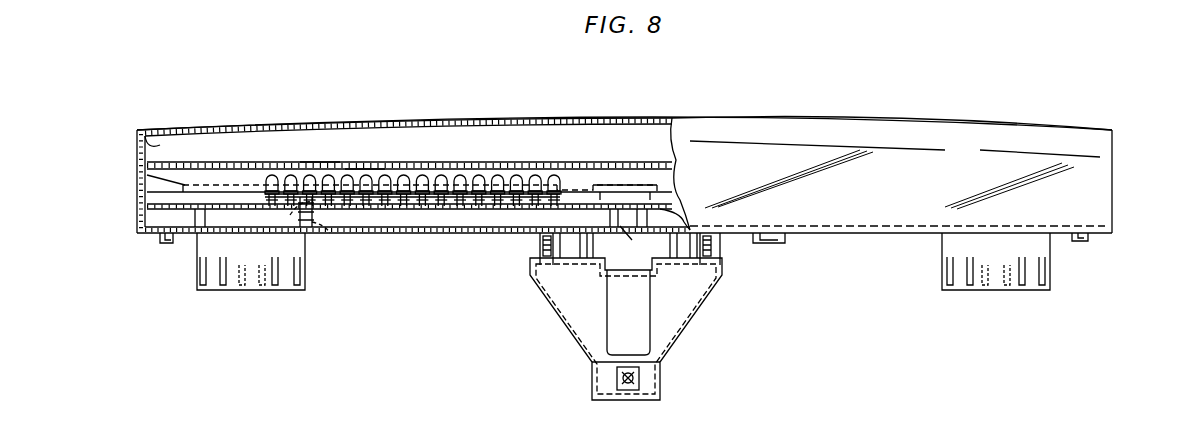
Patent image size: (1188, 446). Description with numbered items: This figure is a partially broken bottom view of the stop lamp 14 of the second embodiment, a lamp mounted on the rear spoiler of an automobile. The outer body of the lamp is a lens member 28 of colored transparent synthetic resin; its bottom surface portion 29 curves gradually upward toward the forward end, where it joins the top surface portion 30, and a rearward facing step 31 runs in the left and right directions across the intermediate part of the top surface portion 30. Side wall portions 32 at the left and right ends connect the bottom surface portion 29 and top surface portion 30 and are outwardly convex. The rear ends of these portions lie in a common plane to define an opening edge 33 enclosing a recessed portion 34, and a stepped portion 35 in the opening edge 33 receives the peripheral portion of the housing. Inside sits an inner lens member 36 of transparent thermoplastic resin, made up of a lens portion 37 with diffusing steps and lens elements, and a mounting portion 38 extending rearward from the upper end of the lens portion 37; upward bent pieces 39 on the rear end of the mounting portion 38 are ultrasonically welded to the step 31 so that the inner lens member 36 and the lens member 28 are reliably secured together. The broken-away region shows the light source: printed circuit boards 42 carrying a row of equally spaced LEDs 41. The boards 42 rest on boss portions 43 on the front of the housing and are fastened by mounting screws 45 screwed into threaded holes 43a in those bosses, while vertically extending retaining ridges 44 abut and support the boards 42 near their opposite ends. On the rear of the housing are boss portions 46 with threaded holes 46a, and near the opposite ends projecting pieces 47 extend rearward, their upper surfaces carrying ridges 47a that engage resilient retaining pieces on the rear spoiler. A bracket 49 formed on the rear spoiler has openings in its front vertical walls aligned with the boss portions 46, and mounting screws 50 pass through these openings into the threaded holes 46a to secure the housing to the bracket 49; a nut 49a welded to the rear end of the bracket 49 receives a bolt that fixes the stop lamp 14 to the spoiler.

The stop lamp 14 is at (800, 53).
The lens member 28 is at (822, 120).
The bottom surface portion 29 is at (852, 232).
The top surface portion 30 is at (548, 128).
The rearward facing step 31 is at (622, 188).
The side wall portions 32 is at (137, 176).
The opening edge 33 is at (137, 230).
The recessed portion 34 is at (158, 142).
The stepped portion 35 is at (162, 241).
The inner lens member 36 is at (366, 165).
The lens portion 37 is at (322, 162).
The mounting portion 38 is at (221, 172).
The upward bent pieces 39 is at (183, 192).
The LEDs 41 is at (402, 180).
The printed circuit boards 42 is at (690, 222).
The boss portions 43 is at (314, 216).
The threaded holes 43a is at (288, 222).
The retaining ridges 44 is at (197, 232).
The mounting screws 45 is at (314, 232).
The boss portions 46 is at (540, 262).
The threaded holes 46a is at (543, 246).
The projecting pieces 47 is at (272, 292).
The projections or ridges 47a is at (262, 286).
The bracket 49 is at (672, 340).
The nut 49a is at (632, 392).
The mounting screws 50 is at (548, 266).